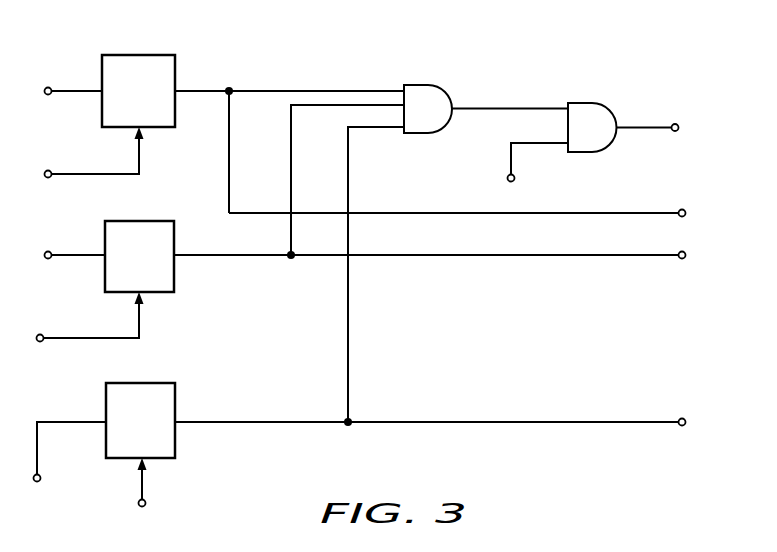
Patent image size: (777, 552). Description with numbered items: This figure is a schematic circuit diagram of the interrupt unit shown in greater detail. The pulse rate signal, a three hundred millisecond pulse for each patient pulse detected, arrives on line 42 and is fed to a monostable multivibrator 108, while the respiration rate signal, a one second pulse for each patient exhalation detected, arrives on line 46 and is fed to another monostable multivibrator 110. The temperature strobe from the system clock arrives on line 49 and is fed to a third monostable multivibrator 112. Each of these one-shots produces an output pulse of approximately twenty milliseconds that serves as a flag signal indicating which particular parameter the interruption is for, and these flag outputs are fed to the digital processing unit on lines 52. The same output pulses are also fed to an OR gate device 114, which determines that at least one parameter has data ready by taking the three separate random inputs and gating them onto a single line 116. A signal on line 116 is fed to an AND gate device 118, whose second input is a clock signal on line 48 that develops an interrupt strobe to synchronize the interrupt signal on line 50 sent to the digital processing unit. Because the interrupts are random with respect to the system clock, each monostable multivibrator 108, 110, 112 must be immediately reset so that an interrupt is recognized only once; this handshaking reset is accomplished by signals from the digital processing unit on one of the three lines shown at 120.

The line 42 is at (80, 90).
The line 46 is at (83, 253).
The line 48 is at (514, 171).
The line 49 is at (78, 420).
The line 50 is at (638, 129).
The lines 52 is at (697, 193).
The monostable multivibrator 108 is at (131, 56).
The monostable multivibrator 110 is at (133, 221).
The monostable multivibrator 112 is at (152, 383).
The OR gate device 114 is at (413, 85).
The line 116 is at (493, 107).
The AND gate device 118 is at (586, 103).
The lines 120 is at (92, 173).